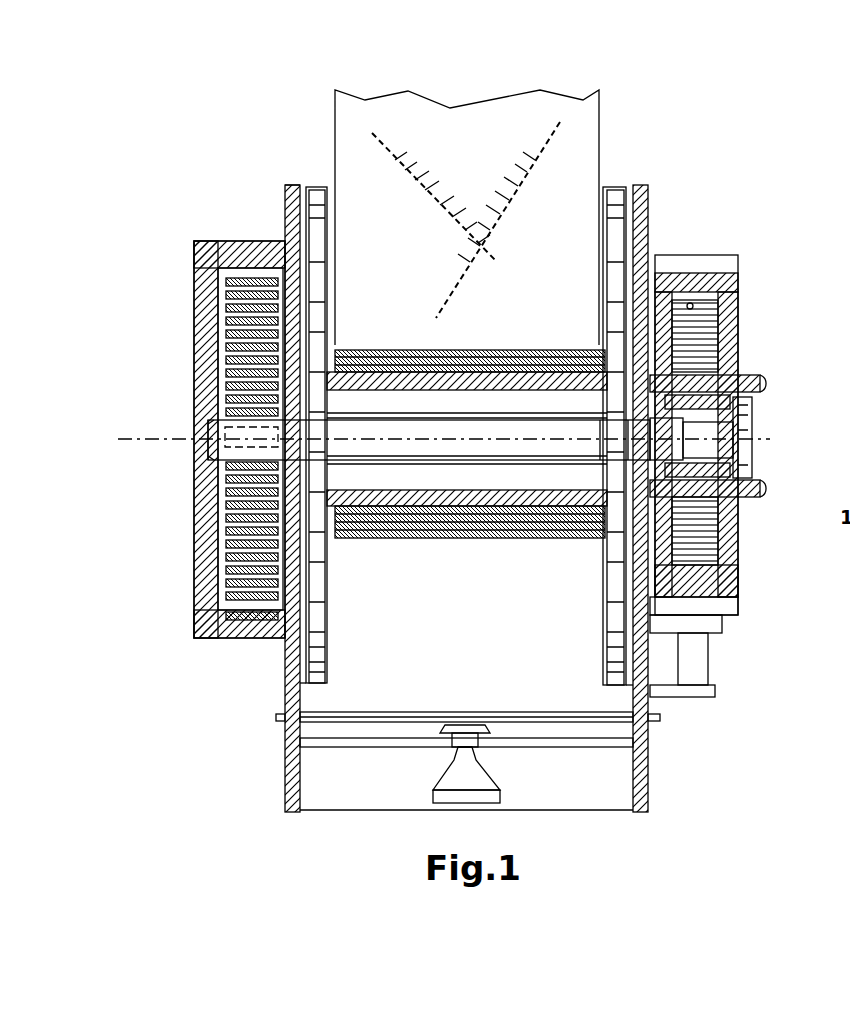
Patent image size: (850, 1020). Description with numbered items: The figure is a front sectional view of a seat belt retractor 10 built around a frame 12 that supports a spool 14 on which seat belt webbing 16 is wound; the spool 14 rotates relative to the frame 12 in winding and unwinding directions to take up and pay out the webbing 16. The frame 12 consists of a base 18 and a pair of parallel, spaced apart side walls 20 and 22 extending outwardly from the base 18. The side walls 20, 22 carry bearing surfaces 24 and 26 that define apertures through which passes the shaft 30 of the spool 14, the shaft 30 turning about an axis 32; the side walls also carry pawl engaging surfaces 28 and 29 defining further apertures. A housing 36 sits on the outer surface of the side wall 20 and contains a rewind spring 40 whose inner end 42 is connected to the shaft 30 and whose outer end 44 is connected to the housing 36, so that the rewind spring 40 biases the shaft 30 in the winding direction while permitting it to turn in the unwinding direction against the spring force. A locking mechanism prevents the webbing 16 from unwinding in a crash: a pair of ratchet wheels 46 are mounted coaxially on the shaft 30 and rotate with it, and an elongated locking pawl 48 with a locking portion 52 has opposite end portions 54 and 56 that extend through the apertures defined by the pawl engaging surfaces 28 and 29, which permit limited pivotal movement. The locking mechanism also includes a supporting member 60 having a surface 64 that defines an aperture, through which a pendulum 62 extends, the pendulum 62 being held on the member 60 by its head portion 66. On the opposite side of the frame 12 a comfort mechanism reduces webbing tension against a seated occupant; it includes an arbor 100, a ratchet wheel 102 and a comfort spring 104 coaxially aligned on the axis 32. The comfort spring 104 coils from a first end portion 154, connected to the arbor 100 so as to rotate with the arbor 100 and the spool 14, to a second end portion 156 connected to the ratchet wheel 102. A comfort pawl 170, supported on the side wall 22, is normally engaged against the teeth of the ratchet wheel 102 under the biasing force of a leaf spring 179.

The seat belt retractor 10 is at (216, 118).
The frame 12 is at (282, 207).
The spool 14 is at (390, 378).
The seat belt webbing 16 is at (600, 122).
The base 18 is at (316, 185).
The side wall 20 is at (290, 187).
The side wall 22 is at (647, 205).
The bearing surface 24 is at (302, 422).
The bearing surface 26 is at (620, 438).
The pawl engaging surface 28 is at (295, 685).
The pawl engaging surface 29 is at (638, 688).
The shaft 30 is at (456, 428).
The axis 32 is at (170, 438).
The housing 36 is at (205, 270).
The rewind spring 40 is at (228, 312).
The inner end 42 is at (240, 455).
The outer end 44 is at (240, 625).
The ratchet wheels 46 is at (320, 578).
The locking pawl 48 is at (390, 705).
The locking portion 52 is at (432, 714).
The end portion 54 is at (283, 718).
The end portion 56 is at (660, 722).
The supporting member 60 is at (338, 745).
The pendulum 62 is at (480, 772).
The surface 64 is at (447, 755).
The head portion 66 is at (470, 726).
The arbor 100 is at (655, 322).
The ratchet wheel 102 is at (738, 300).
The comfort spring 104 is at (738, 335).
The first end portion 154 is at (742, 425).
The second end portion 156 is at (715, 275).
The comfort pawl 170 is at (690, 606).
The leaf spring 179 is at (695, 655).